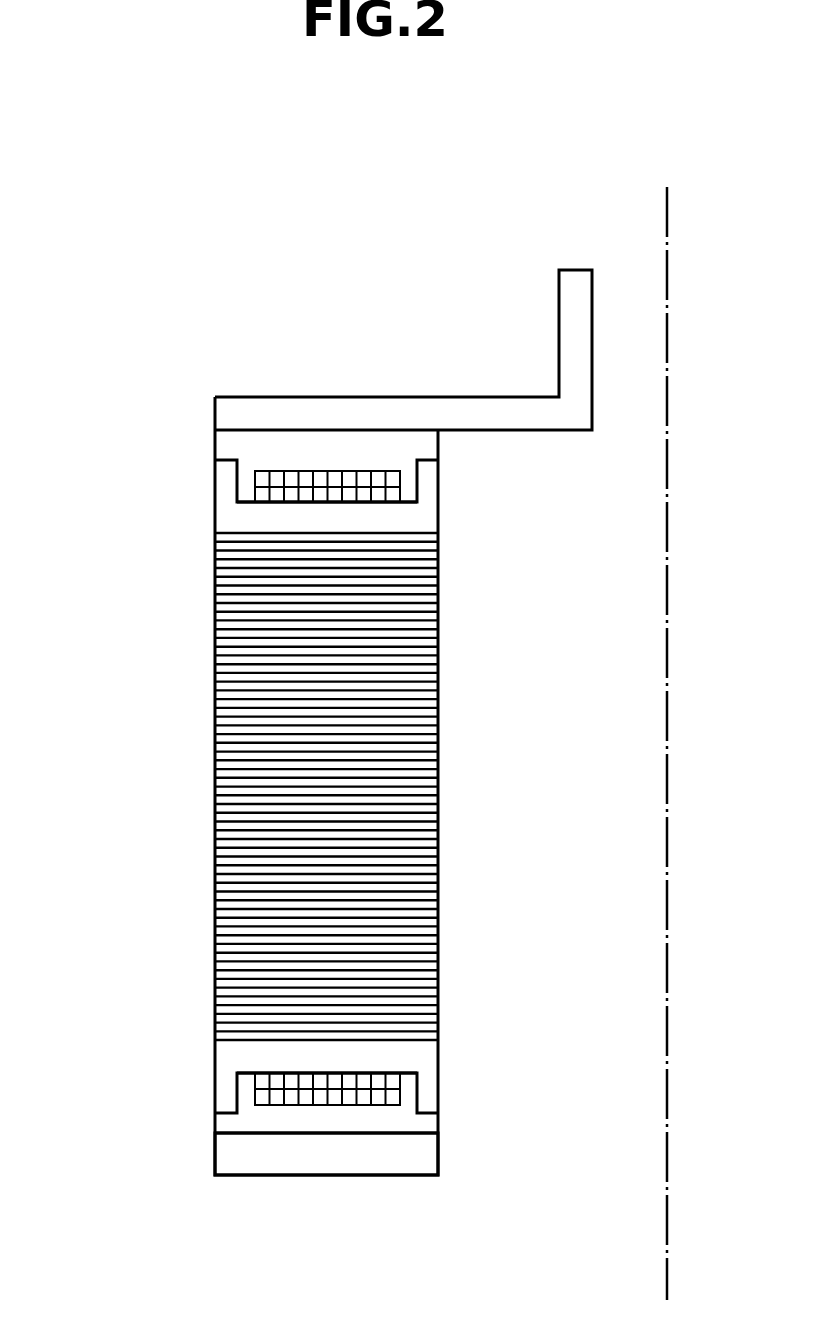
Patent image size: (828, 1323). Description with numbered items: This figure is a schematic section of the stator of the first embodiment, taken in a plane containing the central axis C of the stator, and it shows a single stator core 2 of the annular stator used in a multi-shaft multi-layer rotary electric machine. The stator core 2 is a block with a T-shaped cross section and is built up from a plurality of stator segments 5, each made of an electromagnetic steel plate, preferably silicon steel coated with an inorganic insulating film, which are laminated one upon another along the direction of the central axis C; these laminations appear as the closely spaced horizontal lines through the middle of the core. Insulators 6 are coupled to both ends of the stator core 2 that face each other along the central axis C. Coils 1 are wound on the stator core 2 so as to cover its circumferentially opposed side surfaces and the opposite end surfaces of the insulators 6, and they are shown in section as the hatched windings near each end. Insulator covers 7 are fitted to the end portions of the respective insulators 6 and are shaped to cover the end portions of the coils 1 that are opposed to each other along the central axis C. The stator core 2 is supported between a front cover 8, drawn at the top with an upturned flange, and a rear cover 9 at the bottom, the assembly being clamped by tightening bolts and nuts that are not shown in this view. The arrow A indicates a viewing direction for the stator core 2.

The coils 1 is at (380, 477).
The stator core 2 is at (214, 802).
The stator segments 5 is at (238, 872).
The insulators 6 is at (232, 513).
The insulator covers 7 is at (242, 447).
The front cover 8 is at (290, 412).
The rear cover 9 is at (382, 1157).
The direction arrow A is at (193, 598).
The central axis C is at (668, 728).